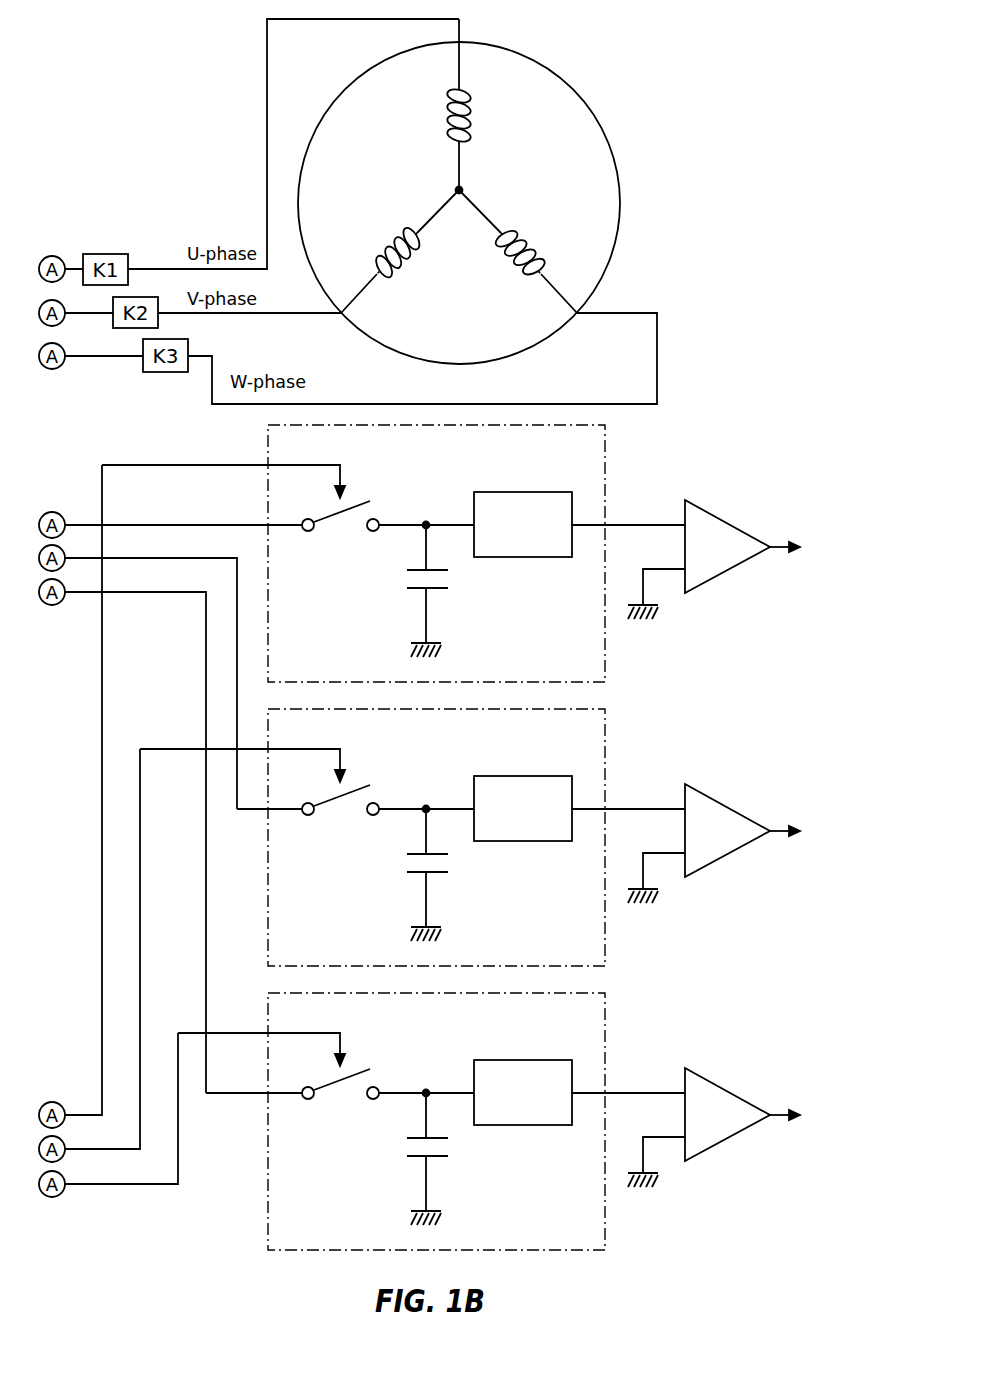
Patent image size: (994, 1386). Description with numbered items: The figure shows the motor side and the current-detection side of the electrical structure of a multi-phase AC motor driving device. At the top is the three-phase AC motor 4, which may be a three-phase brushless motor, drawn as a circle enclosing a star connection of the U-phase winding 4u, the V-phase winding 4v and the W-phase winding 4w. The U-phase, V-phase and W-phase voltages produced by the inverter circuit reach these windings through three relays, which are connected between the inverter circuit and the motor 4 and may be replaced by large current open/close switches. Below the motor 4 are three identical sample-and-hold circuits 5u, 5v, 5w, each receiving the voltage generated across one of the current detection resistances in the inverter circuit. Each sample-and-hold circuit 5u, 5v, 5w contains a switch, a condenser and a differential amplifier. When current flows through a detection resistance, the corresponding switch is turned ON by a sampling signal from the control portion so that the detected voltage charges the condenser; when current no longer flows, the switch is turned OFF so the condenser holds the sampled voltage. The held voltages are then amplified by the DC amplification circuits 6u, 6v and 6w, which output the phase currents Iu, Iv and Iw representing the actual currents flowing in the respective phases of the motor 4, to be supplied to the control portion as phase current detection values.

The three-phase AC motor 4 is at (483, 191).
The U-phase winding 4u is at (478, 104).
The V-phase winding 4v is at (400, 251).
The W-phase winding 4w is at (518, 251).
The sample-and-hold circuit 5u is at (606, 460).
The sample-and-hold circuit 5v is at (404, 837).
The sample-and-hold circuit 5w is at (425, 1121).
The DC amplification circuit 6u is at (730, 520).
The DC amplification circuit 6v is at (697, 841).
The DC amplification circuit 6w is at (699, 1125).